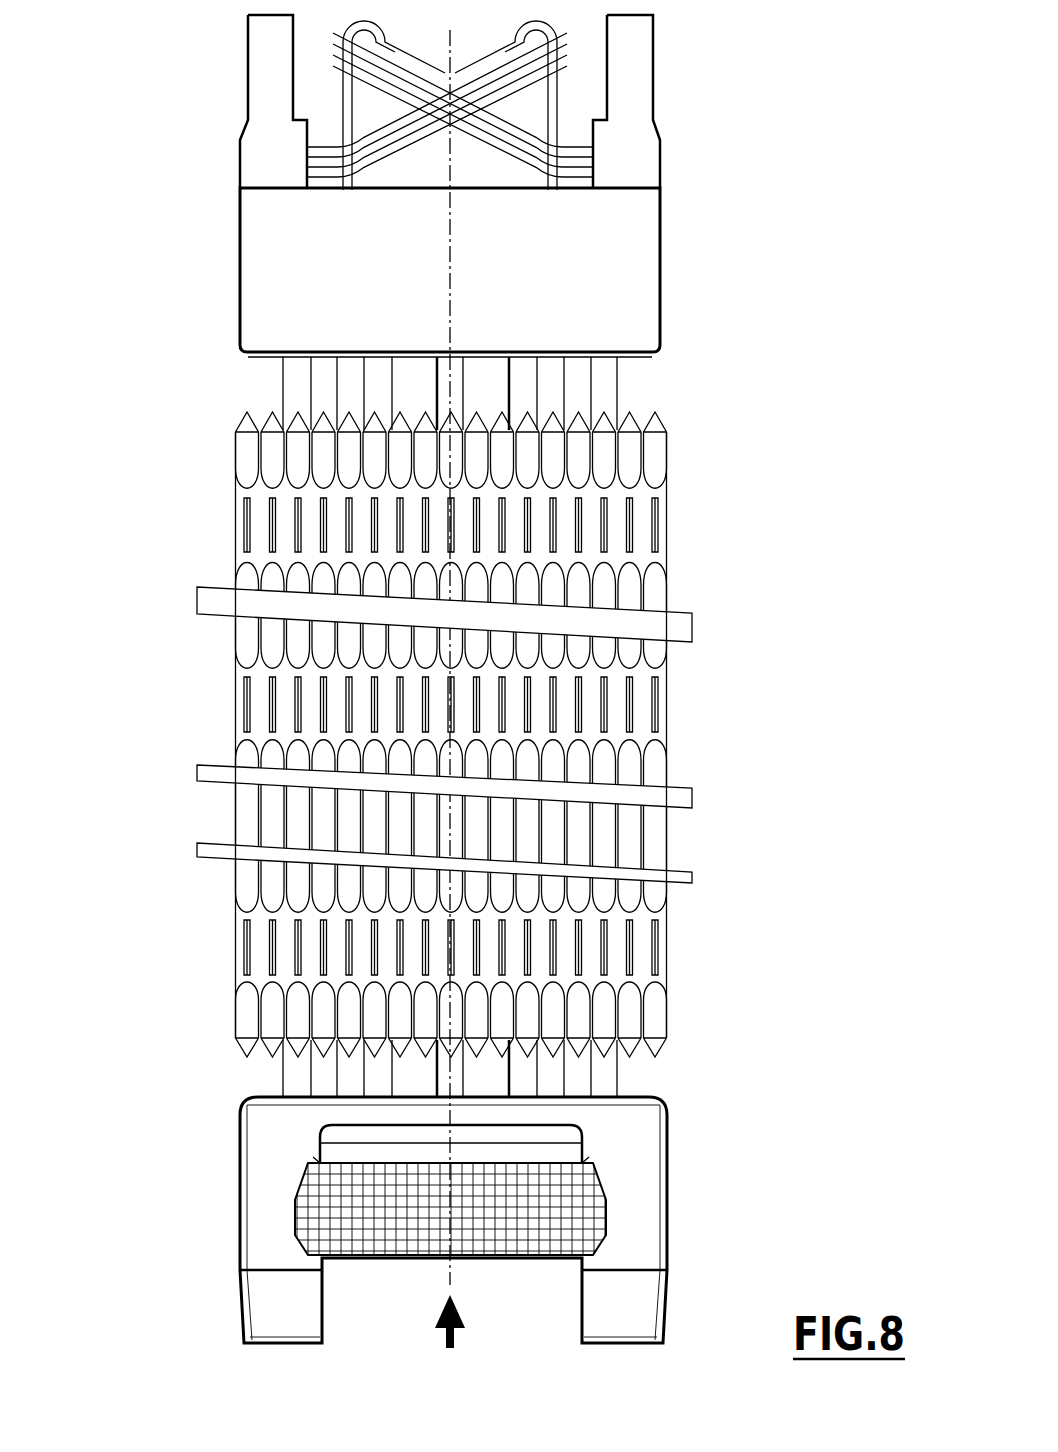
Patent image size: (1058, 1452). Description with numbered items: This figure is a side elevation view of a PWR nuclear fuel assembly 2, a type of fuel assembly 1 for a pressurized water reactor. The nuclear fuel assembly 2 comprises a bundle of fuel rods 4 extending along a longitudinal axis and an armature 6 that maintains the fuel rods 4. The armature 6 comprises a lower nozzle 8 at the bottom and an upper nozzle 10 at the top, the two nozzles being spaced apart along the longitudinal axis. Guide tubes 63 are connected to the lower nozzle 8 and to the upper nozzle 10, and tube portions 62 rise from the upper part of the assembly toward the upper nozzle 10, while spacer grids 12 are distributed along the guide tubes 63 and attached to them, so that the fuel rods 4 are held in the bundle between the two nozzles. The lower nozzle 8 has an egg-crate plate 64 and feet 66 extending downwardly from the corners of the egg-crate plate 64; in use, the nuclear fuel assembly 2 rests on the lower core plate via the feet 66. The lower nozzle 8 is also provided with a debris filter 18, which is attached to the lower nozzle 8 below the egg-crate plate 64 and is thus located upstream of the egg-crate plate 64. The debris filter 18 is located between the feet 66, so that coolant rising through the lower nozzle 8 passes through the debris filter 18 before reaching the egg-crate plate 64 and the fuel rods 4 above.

The nuclear fuel assembly 2 is at (86, 143).
The armature 6 is at (690, 220).
The upper nozzle 10 is at (220, 245).
The upper connecting wires 62 is at (620, 387).
The heat exchanger core 1 is at (655, 490).
The spacer grids 12 is at (655, 668).
The fuel rods 4 is at (276, 642).
The guide tubes 63 is at (326, 1077).
The lower nozzle 8 is at (165, 1233).
The egg-crate plate 64 is at (560, 1121).
The debris filter 18 is at (590, 1201).
The feet 66 is at (272, 1310).